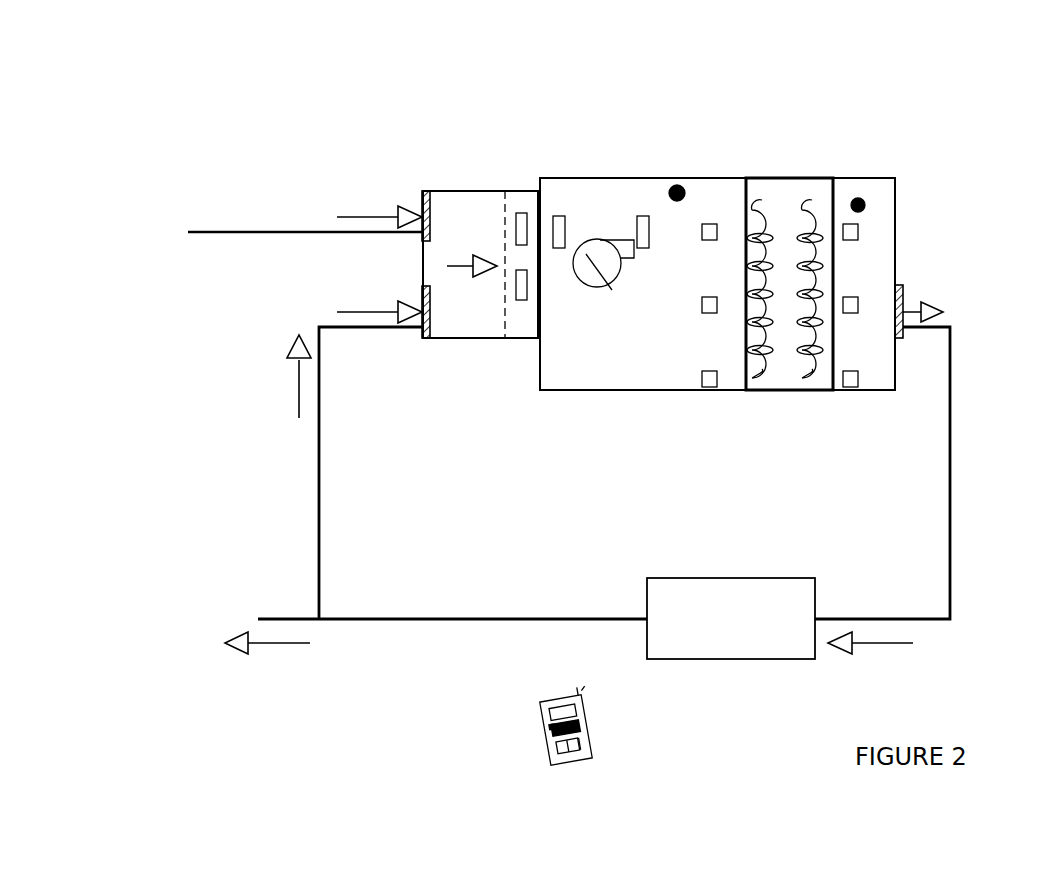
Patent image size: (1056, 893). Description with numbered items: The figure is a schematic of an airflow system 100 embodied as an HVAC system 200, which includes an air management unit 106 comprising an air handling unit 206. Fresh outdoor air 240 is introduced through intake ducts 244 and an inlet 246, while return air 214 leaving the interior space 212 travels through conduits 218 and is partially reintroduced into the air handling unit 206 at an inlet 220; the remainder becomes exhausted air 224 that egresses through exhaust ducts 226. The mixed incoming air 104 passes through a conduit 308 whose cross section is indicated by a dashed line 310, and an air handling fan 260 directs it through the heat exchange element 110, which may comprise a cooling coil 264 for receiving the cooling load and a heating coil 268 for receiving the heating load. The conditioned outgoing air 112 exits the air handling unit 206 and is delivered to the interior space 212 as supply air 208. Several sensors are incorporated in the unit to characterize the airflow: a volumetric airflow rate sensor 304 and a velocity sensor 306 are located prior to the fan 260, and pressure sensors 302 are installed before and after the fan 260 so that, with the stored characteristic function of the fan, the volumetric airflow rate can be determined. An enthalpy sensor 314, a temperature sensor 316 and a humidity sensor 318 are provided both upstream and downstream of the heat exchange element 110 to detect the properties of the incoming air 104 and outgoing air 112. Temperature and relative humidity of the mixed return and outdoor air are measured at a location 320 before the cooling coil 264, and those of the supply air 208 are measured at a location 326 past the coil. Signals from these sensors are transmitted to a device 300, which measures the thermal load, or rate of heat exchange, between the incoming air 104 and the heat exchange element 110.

The airflow system 100 is at (152, 134).
The Heating, Ventilation and Air Conditioning (HVAC) system 200 is at (204, 182).
The intake ducts 244 is at (304, 231).
The outdoor air 240 is at (352, 195).
The inlet 246 is at (425, 190).
The inlet 220 is at (422, 288).
The return air 214 is at (337, 318).
The conduits 218 is at (319, 466).
The exhaust ducts 226 is at (272, 617).
The exhausted air 224 is at (280, 645).
The interior space 212 is at (723, 660).
The supply air 208 is at (880, 643).
The incoming air 104 is at (457, 265).
The dashed line 310 is at (495, 190).
The conduit 308 is at (480, 190).
The velocity sensor 306 is at (522, 190).
The volumetric airflow rate sensor 304 is at (518, 290).
The air handling unit 206 is at (850, 177).
The air management unit 106 is at (868, 177).
The heat exchange element 110 is at (748, 178).
The cooling coil 264 is at (775, 200).
The heating coil 268 is at (812, 200).
The air handling fan 260 is at (606, 290).
The pressure sensors 302 is at (559, 250).
The location 320 is at (680, 186).
The location 326 is at (866, 205).
The enthalpy sensor 314 is at (709, 240).
The temperature sensor 316 is at (709, 313).
The humidity sensor 318 is at (709, 387).
The outgoing air 112 is at (912, 300).
The device 300 is at (540, 716).